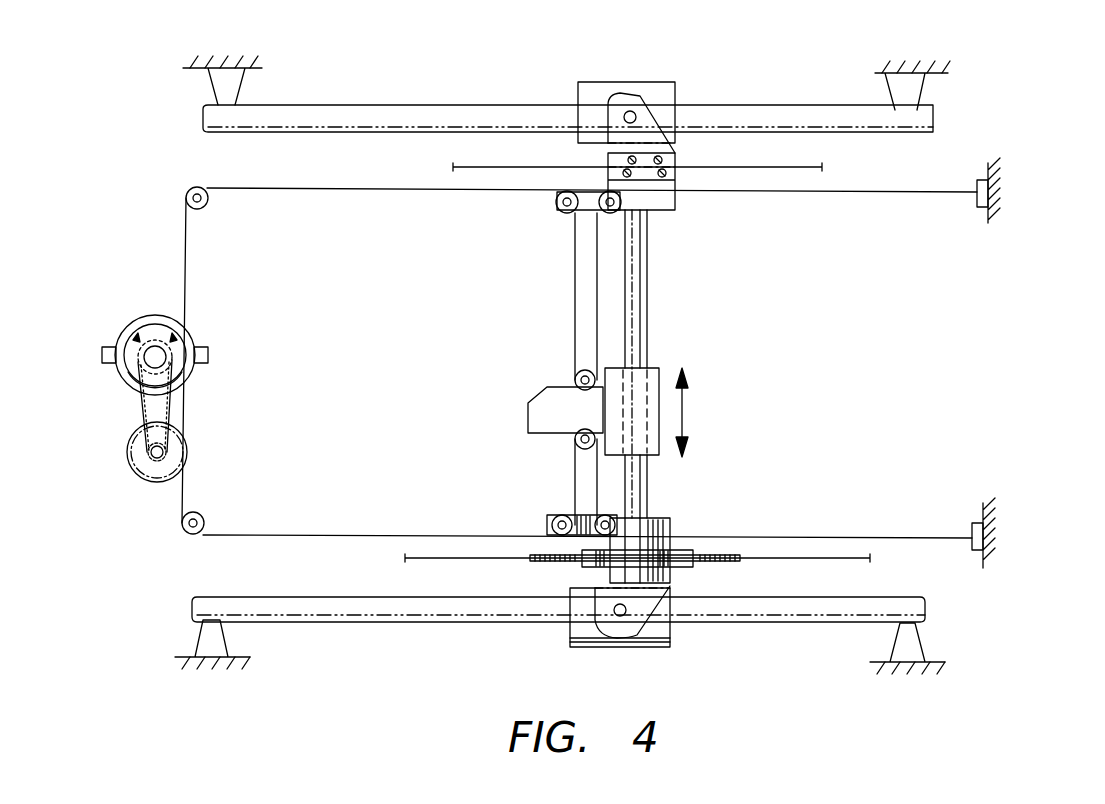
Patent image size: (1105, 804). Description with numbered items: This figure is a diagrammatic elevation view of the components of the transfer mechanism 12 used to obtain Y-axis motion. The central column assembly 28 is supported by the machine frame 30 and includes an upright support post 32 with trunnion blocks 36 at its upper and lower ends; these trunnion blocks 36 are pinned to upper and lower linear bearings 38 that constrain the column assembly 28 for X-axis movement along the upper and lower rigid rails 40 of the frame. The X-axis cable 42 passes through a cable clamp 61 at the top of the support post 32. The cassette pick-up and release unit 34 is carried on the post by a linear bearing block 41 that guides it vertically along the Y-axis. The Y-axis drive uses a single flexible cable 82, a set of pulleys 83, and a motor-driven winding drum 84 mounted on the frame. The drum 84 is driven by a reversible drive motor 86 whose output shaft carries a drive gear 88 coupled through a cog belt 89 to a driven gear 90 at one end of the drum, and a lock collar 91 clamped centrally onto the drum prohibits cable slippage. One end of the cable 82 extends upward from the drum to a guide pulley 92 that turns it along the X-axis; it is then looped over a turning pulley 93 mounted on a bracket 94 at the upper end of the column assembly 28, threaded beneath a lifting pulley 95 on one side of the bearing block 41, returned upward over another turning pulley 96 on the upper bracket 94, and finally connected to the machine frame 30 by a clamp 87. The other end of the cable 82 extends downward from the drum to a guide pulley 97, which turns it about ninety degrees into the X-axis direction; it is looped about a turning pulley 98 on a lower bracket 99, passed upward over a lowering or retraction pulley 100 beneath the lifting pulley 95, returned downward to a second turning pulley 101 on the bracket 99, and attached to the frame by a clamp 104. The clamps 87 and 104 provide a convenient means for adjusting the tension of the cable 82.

The transfer mechanism 12 is at (993, 143).
The central column assembly 28 is at (670, 307).
The machine frame 30 is at (244, 64).
The upright support post 32 is at (640, 262).
The cassette pick-up and release unit 34 is at (535, 415).
The trunnion block 36 is at (632, 108).
The linear bearing 38 is at (680, 92).
The rigid rail 40 is at (460, 106).
The linear bearing block 41 is at (655, 373).
The cable 42 is at (800, 168).
The cable clamp 61 is at (678, 165).
The flexible cable 82 is at (418, 193).
The set of pulleys 83 is at (555, 209).
The winding drum 84 is at (150, 336).
The reversible drive motor 86 is at (157, 484).
The clamp 87 is at (982, 208).
The drive gear 88 is at (166, 453).
The cog belt 89 is at (172, 412).
The driven gear 90 is at (172, 357).
The lock collar 91 is at (104, 366).
The guide pulley 92 is at (185, 196).
The turning pulley 93 is at (568, 215).
The bracket 94 is at (585, 196).
The lifting pulley 95 is at (575, 377).
The turning pulley 96 is at (666, 210).
The guide pulley 97 is at (203, 516).
The turning pulley 98 is at (552, 518).
The bracket 99 is at (670, 527).
The lowering or retraction pulley 100 is at (576, 442).
The second turning pulley 101 is at (640, 518).
The clamp 104 is at (975, 552).